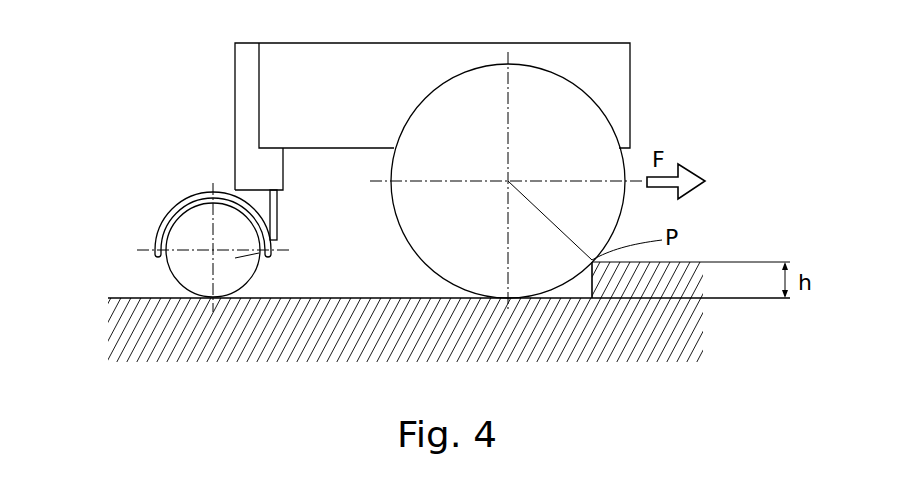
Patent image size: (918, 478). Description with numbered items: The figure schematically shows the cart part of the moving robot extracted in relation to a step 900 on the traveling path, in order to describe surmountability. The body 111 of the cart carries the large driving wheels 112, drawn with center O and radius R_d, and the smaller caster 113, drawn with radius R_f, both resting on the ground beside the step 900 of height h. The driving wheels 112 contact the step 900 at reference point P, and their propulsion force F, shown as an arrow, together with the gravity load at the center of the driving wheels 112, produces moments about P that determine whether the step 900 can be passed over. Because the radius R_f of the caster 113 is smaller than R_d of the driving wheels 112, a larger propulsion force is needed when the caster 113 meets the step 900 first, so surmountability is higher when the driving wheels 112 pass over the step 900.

The housing 111 is at (630, 73).
The driving wheels 112 is at (428, 268).
The caster 113 is at (167, 270).
The step 900 is at (592, 290).